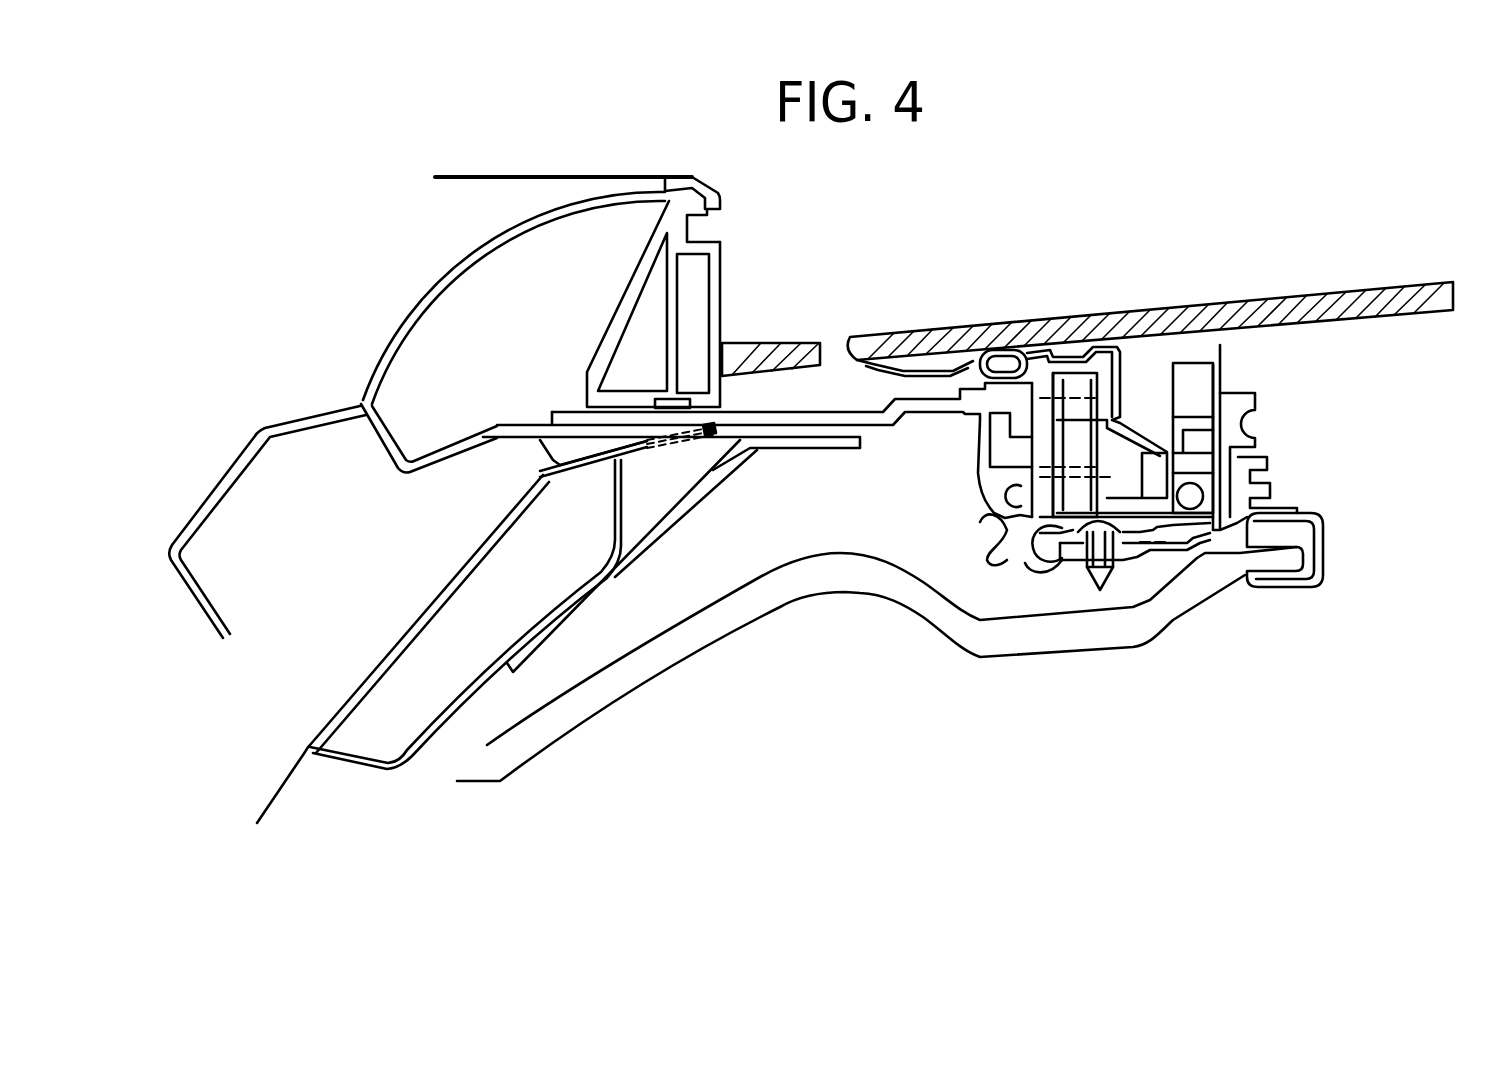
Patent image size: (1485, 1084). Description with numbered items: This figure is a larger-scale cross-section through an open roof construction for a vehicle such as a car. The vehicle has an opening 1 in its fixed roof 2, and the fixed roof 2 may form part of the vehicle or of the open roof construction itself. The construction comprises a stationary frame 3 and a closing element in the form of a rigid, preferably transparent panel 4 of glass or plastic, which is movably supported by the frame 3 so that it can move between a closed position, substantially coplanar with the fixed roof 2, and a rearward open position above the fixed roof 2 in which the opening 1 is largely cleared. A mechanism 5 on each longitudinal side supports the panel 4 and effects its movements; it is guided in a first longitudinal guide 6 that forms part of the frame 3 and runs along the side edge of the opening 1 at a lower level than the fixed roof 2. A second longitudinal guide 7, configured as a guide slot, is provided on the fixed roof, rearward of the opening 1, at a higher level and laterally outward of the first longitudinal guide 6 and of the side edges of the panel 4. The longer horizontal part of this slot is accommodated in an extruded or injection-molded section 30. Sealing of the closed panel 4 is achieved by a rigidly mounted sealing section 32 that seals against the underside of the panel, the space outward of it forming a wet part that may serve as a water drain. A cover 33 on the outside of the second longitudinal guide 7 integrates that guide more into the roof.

The opening 1 is at (1361, 402).
The fixed roof 2 is at (353, 693).
The frame 3 is at (1012, 553).
The panel 4 is at (1208, 313).
The mechanism 5 is at (1276, 470).
The first longitudinal guide 6 is at (1125, 513).
The second longitudinal guide 7 is at (708, 229).
The extruded section 30 is at (725, 279).
The sealing section 32 is at (1000, 350).
The cover 33 is at (488, 239).